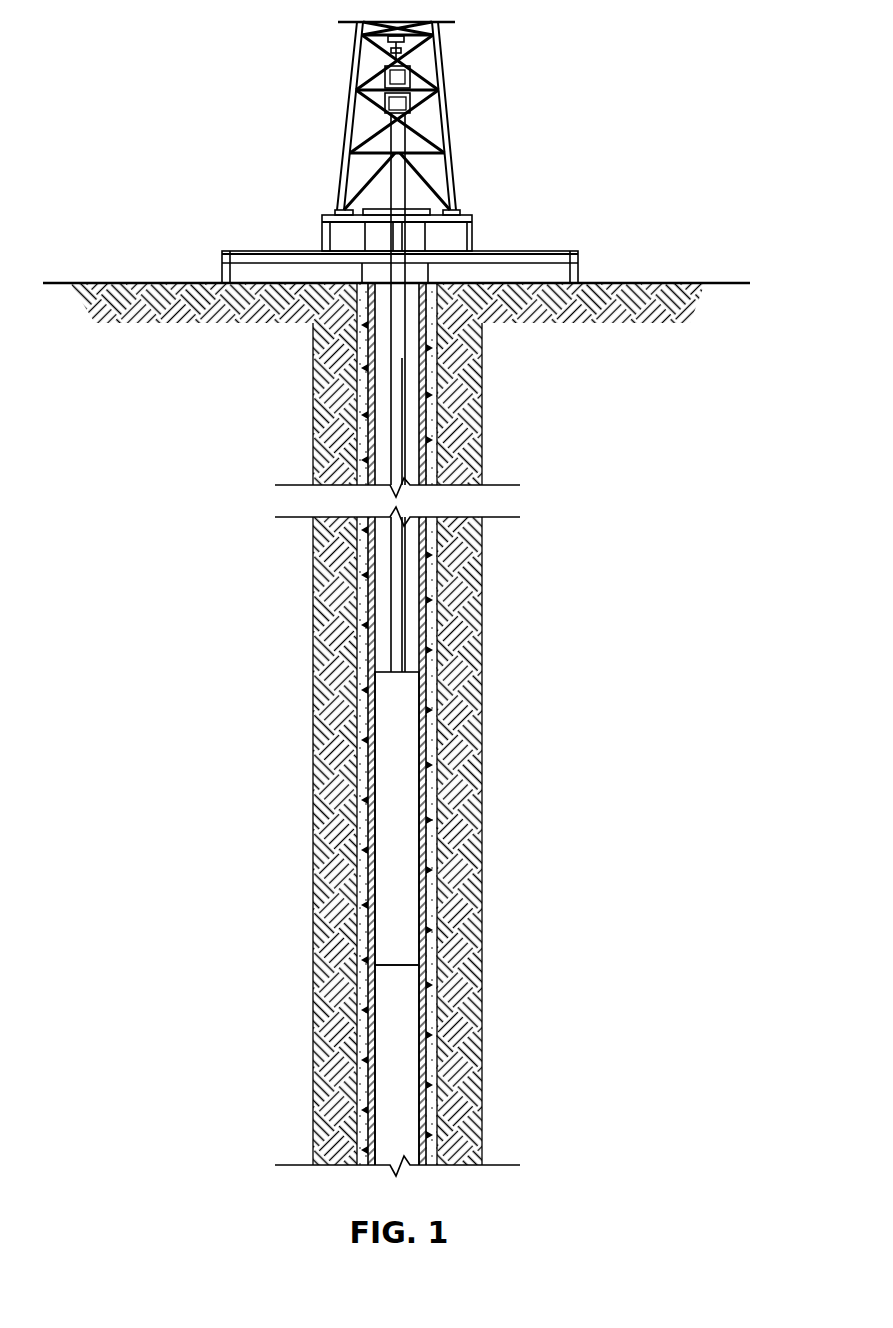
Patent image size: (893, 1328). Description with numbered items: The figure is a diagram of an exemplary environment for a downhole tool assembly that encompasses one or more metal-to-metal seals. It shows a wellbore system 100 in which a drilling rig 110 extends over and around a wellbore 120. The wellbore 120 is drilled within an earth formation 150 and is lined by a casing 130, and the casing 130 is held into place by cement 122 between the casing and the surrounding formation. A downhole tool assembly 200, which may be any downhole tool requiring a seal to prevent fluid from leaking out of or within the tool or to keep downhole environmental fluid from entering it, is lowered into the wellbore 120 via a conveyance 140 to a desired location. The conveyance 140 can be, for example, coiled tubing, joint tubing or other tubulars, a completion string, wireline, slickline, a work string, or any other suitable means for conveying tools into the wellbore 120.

The wellbore system 100 is at (618, 90).
The drilling rig 110 is at (345, 125).
The wellbore 120 is at (417, 601).
The cement 122 is at (428, 637).
The casing 130 is at (416, 1028).
The conveyance 140 is at (420, 665).
The earth formation 150 is at (472, 1080).
The downhole tool assembly 200 is at (405, 776).